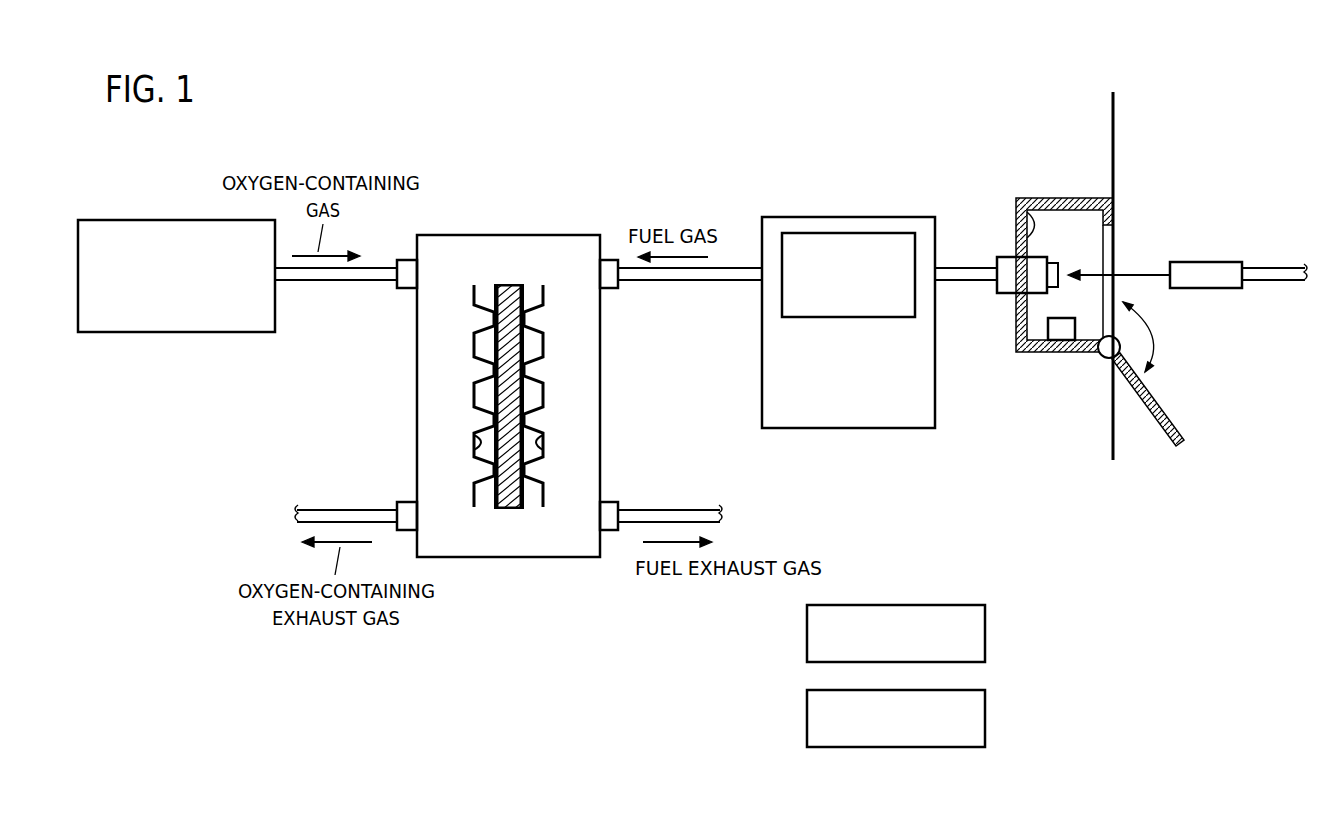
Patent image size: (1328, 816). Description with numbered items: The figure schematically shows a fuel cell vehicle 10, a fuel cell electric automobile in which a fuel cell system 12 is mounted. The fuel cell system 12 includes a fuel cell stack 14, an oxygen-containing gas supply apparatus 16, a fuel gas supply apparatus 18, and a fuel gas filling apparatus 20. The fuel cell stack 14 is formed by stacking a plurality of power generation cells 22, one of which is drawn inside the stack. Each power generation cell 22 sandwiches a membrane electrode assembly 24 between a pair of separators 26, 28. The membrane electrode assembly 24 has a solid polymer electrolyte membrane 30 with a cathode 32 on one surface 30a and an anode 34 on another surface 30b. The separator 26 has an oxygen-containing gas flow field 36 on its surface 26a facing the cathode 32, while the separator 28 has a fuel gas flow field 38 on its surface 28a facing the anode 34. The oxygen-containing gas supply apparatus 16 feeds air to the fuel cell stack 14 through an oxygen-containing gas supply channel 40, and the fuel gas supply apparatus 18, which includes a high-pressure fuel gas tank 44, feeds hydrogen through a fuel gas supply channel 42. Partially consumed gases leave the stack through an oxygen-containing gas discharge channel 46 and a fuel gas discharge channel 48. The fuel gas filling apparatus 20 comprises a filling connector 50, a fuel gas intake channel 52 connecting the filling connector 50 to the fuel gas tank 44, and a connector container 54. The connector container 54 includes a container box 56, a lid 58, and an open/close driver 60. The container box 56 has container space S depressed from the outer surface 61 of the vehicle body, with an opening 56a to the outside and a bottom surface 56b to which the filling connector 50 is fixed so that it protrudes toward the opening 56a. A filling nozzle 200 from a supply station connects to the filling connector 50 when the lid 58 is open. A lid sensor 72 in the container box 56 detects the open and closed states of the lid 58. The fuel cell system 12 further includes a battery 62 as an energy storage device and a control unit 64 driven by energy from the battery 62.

The fuel cell vehicle 10 is at (239, 148).
The fuel cell system 12 is at (508, 309).
The fuel cell stack 14 is at (523, 558).
The oxygen-containing gas supply apparatus 16 is at (143, 219).
The fuel gas supply apparatus 18 is at (848, 323).
The fuel gas filling apparatus 20 is at (1079, 288).
The power generation cell 22 is at (559, 284).
The membrane electrode assembly 24 is at (508, 343).
The separator 26 is at (470, 348).
The surface of separator 26a is at (475, 438).
The separator 28 is at (545, 348).
The surface of separator 28a is at (543, 438).
The solid polymer electrolyte membrane 30 is at (508, 288).
The one surface of solid polymer electrolyte membrane 30a is at (493, 463).
The another surface of solid polymer electrolyte membrane 30b is at (526, 463).
The cathode 32 is at (496, 287).
The anode 34 is at (540, 353).
The oxygen-containing gas flow field 36 is at (485, 395).
The fuel gas flow field 38 is at (530, 397).
The oxygen-containing gas supply channel 40 is at (302, 283).
The fuel gas supply channel 42 is at (663, 283).
The fuel gas tank 44 is at (811, 232).
The oxygen-containing gas discharge channel 46 is at (327, 510).
The fuel gas discharge channel 48 is at (685, 509).
The filling connector 50 is at (1001, 256).
The fuel gas intake channel 52 is at (955, 283).
The connector container 54 is at (1075, 190).
The container box 56 is at (1038, 353).
The opening 56a is at (1112, 252).
The bottom surface 56b is at (1015, 208).
The lid 58 is at (1182, 434).
The open/close driver 60 is at (1102, 358).
The outer surface 61 is at (1115, 128).
The battery 62 is at (806, 705).
The control unit 64 is at (806, 620).
The lid sensor 72 is at (1058, 335).
The filling nozzle 200 is at (1212, 289).
The container space S is at (1052, 225).